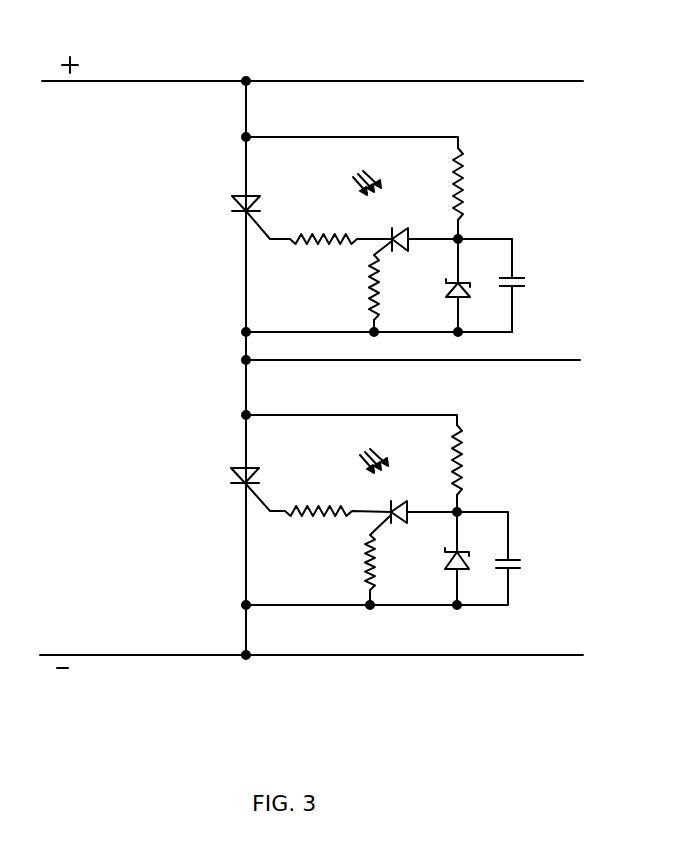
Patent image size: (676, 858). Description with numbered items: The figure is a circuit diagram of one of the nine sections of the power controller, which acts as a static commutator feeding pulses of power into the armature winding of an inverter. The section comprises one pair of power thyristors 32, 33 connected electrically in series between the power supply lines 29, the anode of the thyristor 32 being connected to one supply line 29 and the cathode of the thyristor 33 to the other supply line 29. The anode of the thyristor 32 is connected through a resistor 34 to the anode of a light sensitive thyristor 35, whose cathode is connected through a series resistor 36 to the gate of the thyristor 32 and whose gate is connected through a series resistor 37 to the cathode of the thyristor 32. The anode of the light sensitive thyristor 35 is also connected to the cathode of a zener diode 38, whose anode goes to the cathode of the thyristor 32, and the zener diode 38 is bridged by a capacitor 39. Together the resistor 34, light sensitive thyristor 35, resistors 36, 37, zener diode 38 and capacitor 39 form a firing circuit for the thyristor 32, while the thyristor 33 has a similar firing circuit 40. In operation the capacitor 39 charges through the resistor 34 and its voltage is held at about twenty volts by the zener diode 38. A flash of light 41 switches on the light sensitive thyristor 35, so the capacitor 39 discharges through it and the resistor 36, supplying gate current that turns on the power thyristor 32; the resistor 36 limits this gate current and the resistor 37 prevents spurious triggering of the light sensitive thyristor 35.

The power supply lines 29 is at (152, 76).
The thyristor 32 is at (229, 200).
The thyristor 33 is at (228, 473).
The resistor 34 is at (465, 164).
The light sensitive thyristor 35 is at (396, 245).
The resistor 36 is at (333, 246).
The resistor 37 is at (365, 288).
The zener diode 38 is at (462, 282).
The capacitor 39 is at (520, 281).
The firing circuit 40 is at (470, 502).
The flash of light 41 is at (386, 194).